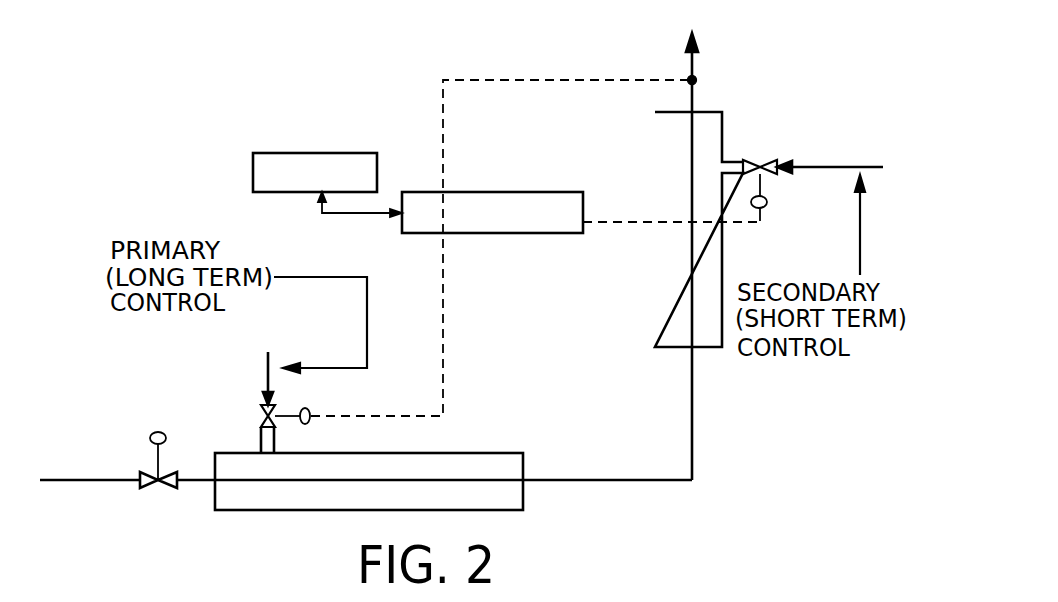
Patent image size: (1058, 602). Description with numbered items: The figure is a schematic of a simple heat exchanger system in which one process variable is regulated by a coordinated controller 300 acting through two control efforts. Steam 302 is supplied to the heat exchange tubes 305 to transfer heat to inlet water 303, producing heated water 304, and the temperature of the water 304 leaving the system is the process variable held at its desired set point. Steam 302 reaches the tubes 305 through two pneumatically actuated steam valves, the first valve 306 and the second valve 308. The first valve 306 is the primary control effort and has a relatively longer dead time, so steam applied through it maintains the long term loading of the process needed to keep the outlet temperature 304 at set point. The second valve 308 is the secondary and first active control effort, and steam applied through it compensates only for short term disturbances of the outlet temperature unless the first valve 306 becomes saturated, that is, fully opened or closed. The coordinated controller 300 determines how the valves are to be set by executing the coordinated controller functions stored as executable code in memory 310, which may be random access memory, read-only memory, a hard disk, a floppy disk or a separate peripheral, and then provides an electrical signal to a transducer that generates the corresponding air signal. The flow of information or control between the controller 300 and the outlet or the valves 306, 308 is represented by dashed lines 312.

The coordinated controller 300 is at (527, 233).
The steam 302 is at (268, 372).
The inlet water 303 is at (108, 478).
The heated water 304 is at (697, 80).
The heat exchange tubes 305 is at (510, 502).
The valve 1 306 is at (311, 421).
The valve 2 308 is at (768, 201).
The memory 310 is at (378, 165).
The dashed lines 312 is at (568, 80).